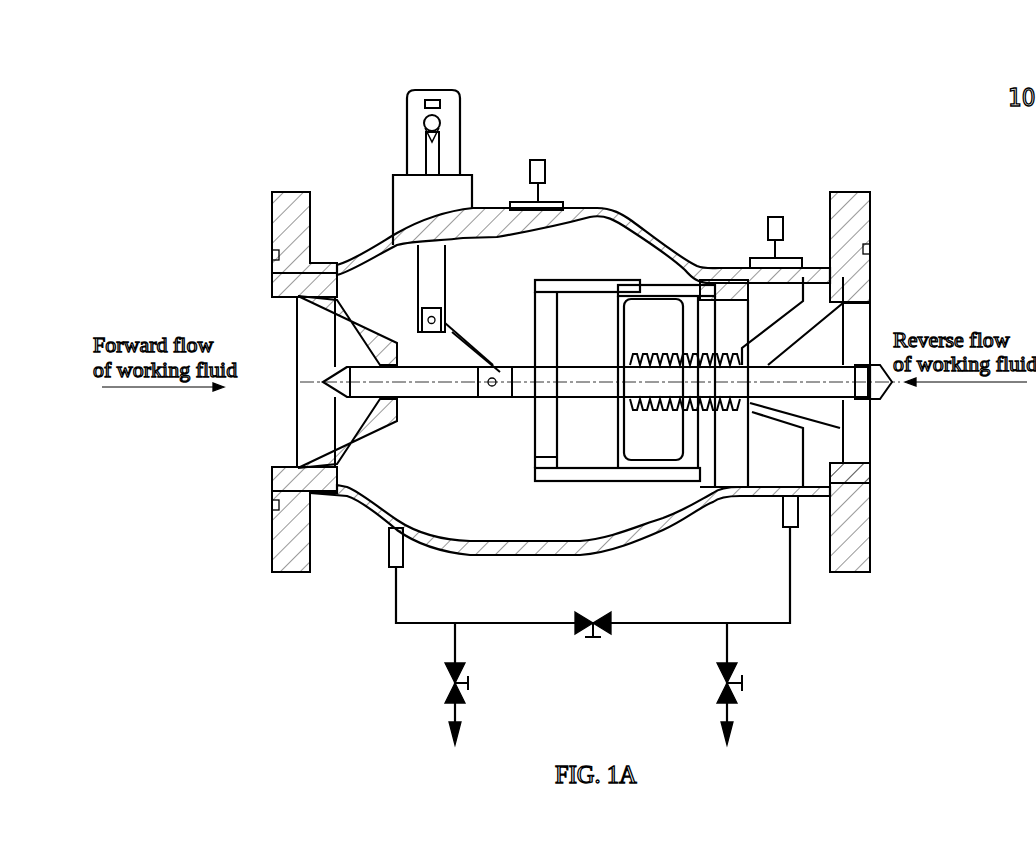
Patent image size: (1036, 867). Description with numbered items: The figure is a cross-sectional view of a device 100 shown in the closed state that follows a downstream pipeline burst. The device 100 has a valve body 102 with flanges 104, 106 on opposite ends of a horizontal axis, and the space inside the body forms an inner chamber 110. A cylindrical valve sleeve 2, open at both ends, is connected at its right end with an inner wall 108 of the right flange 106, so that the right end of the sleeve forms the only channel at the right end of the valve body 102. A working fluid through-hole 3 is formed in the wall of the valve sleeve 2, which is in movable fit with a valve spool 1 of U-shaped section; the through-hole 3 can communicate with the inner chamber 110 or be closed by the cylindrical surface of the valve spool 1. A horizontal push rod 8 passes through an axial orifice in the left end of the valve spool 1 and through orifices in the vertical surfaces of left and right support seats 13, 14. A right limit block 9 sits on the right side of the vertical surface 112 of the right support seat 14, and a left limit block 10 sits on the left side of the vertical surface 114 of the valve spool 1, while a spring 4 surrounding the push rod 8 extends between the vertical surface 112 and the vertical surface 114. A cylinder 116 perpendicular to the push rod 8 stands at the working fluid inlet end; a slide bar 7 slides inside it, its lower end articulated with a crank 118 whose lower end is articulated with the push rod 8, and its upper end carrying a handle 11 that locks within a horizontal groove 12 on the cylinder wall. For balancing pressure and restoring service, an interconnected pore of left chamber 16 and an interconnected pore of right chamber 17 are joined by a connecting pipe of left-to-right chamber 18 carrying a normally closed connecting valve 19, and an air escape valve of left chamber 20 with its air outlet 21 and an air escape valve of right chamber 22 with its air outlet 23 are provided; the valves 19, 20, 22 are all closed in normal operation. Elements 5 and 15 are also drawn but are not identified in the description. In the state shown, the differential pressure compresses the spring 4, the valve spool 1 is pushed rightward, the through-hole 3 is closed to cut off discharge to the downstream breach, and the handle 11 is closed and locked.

The device 100 is at (206, 121).
The valve body 102 is at (276, 202).
The flange 104 is at (290, 228).
The right flange 106 is at (845, 222).
The inner wall of the right flange 108 is at (838, 266).
The inner chamber of the valve body 110 is at (470, 439).
The vertical surface of the right support seat 112 is at (803, 343).
The vertical surface of the valve spool 114 is at (616, 475).
The cylinder 116 is at (413, 188).
The crank 118 is at (348, 375).
The valve spool 1 is at (700, 282).
The cylindrical valve sleeve 2 is at (597, 284).
The working fluid through-hole 3 is at (663, 284).
The spring 4 is at (655, 487).
The valve body shell 5 is at (417, 477).
The slide bar 7 is at (447, 300).
The horizontal push rod 8 is at (335, 428).
The right limit block 9 is at (873, 405).
The left limit block 10 is at (560, 525).
The handle 11 is at (427, 140).
The horizontal groove 12 is at (424, 117).
The left support seat 13 is at (298, 302).
The right support seat 14 is at (864, 478).
The pressure sensor 15 is at (546, 176).
The interconnected pore of left chamber 16 is at (406, 560).
The interconnected pore of right chamber 17 is at (787, 520).
The connecting pipe of left-to-right chamber 18 is at (510, 625).
The connecting valve of left-to-right chamber 19 is at (598, 640).
The air escape valve of left chamber 20 is at (452, 675).
The air outlet of left chamber 21 is at (453, 730).
The air escape valve of right chamber 22 is at (743, 680).
The air outlet of right chamber 23 is at (735, 735).